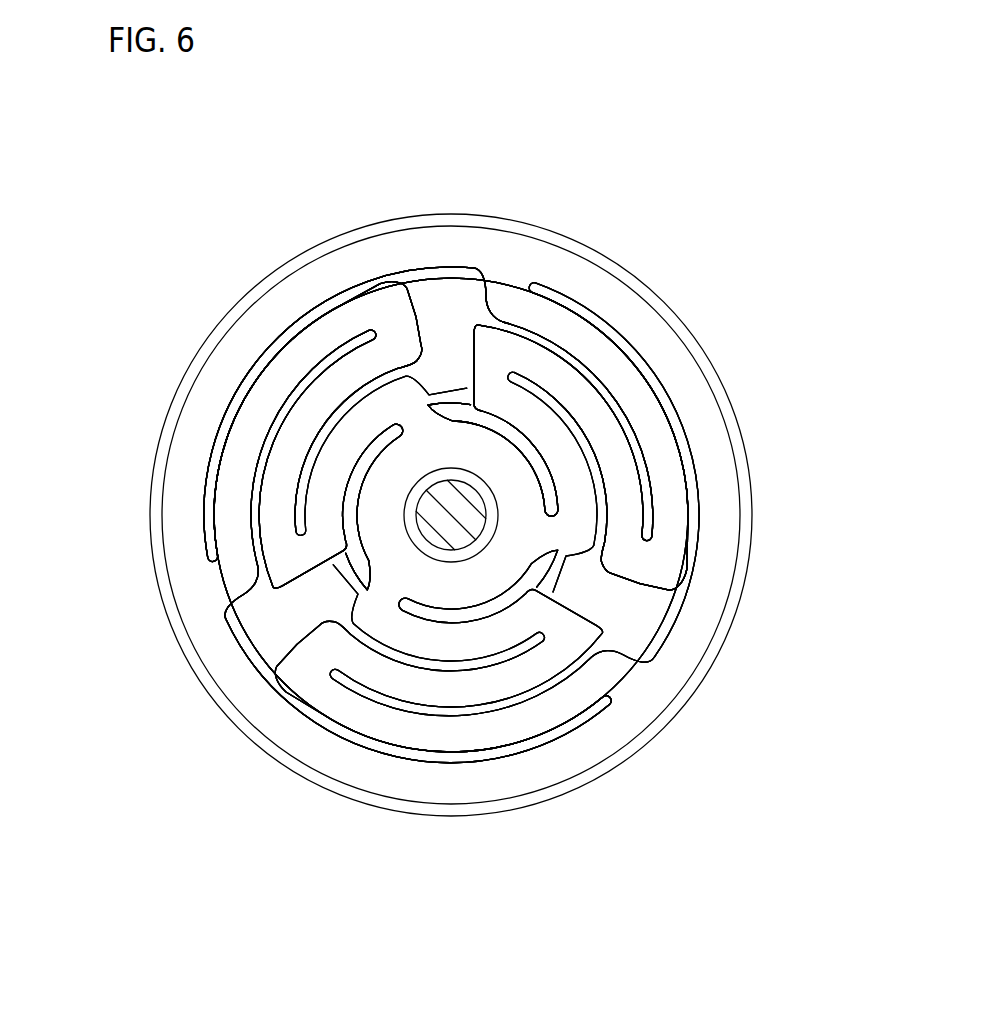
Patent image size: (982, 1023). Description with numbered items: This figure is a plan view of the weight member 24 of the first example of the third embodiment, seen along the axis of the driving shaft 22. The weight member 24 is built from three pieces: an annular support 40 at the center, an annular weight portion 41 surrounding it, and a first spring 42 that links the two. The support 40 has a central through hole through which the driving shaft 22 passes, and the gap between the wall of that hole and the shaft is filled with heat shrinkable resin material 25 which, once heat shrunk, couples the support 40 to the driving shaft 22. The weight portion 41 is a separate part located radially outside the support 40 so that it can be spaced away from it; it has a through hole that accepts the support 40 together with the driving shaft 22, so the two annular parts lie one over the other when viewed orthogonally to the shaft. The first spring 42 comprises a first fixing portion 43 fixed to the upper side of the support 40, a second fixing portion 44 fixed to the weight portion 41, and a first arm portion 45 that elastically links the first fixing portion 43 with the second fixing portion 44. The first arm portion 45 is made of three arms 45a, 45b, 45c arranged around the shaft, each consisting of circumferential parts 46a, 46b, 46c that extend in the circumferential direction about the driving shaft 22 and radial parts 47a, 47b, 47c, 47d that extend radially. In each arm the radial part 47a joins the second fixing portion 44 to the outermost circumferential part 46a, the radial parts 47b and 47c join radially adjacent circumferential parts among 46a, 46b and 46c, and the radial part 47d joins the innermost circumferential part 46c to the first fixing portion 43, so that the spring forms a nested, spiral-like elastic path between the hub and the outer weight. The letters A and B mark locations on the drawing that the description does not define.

The weight member 24 is at (323, 157).
The support 40 is at (334, 547).
The weight portion 41 is at (462, 320).
The first spring 42 is at (529, 260).
The first fixing portion 43 is at (505, 453).
The second fixing portion 44 is at (745, 441).
The first arm portion 45 is at (233, 528).
The arm 45a is at (246, 423).
The arm 45b is at (334, 718).
The arm 45c is at (680, 531).
The circumferential part 46a is at (275, 375).
The circumferential part 46b is at (337, 385).
The circumferential part 46c is at (373, 425).
The radial part 47a is at (237, 580).
The radial part 47b is at (400, 327).
The radial part 47c is at (262, 600).
The radial part 47d is at (465, 320).
The driving shaft 22 is at (462, 517).
The heat shrinkable resin material 25 is at (502, 554).
The width A is at (497, 560).
The width B is at (697, 532).